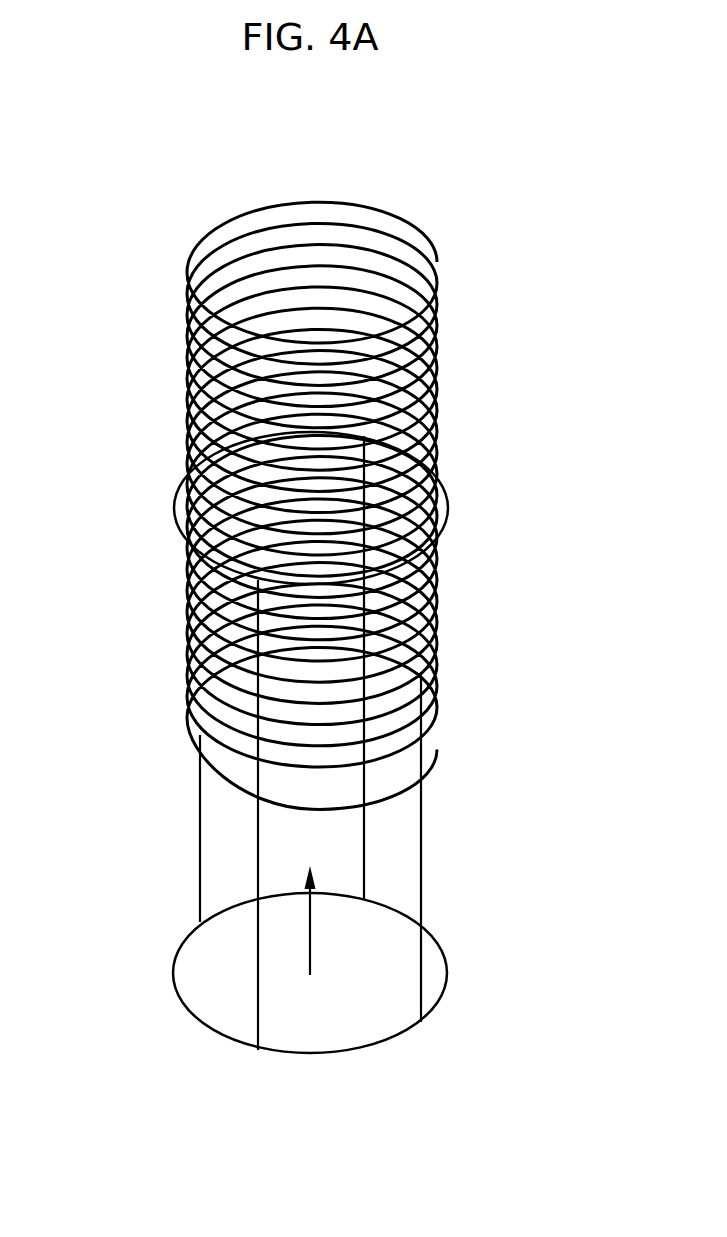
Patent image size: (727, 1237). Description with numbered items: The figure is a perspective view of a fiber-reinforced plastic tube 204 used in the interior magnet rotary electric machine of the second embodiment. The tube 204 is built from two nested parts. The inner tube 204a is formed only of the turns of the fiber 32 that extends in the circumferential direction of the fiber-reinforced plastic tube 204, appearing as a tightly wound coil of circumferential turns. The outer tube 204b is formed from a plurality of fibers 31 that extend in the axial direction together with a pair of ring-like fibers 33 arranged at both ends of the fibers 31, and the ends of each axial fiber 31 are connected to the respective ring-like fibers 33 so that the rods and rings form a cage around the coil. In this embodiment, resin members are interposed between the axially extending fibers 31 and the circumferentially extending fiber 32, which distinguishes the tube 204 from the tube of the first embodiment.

The fiber-reinforced plastic tube 204 is at (455, 173).
The inner tube 204a is at (180, 359).
The outer tube 204b is at (180, 854).
The fiber extending in the circumferential direction 32 is at (222, 217).
The ring-like fibers 33 is at (176, 508).
The fibers extending in the axial direction 31 is at (422, 882).